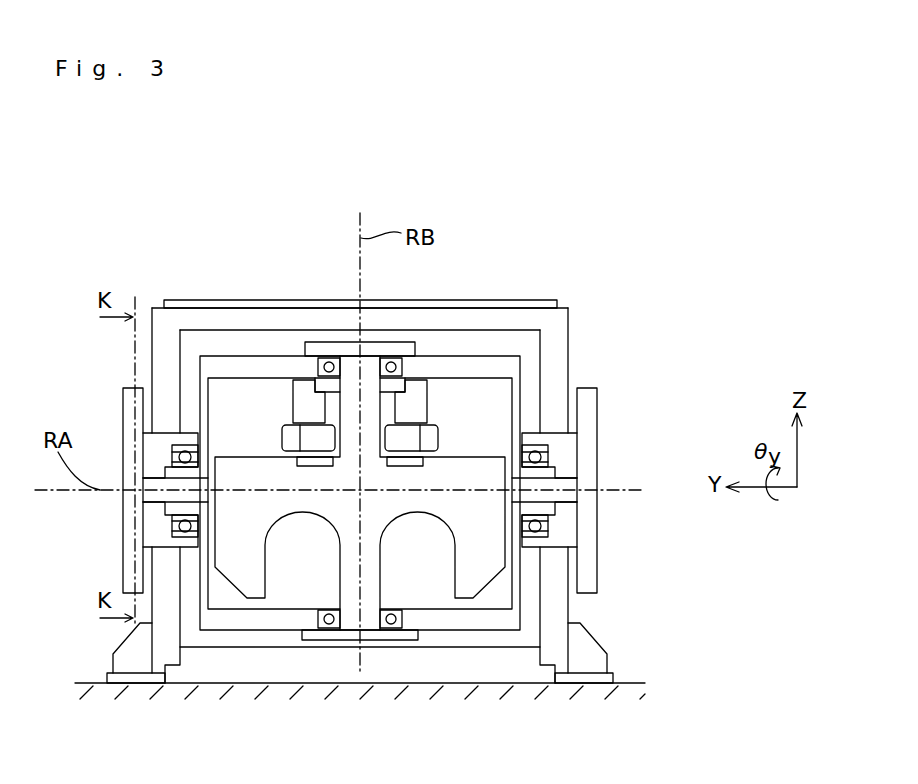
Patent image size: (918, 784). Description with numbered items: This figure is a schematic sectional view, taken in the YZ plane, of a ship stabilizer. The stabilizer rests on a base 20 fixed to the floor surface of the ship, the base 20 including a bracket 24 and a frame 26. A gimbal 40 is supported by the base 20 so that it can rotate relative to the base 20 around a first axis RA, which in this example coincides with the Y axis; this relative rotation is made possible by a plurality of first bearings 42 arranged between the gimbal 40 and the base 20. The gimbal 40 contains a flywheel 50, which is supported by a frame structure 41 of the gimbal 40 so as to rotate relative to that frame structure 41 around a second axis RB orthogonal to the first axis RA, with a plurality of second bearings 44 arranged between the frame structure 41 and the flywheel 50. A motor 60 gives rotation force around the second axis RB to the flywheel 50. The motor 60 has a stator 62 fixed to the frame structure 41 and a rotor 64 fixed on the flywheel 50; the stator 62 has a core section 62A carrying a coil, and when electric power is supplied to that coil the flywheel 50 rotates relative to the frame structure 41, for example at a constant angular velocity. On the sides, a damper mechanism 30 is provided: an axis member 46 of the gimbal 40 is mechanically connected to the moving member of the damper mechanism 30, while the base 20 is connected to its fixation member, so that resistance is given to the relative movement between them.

The base 20 is at (420, 495).
The bracket 24 is at (607, 677).
The frame 26 is at (565, 634).
The damper mechanism 30 is at (125, 400).
The gimbal 40 is at (503, 363).
The frame structure 41 is at (452, 363).
The first bearings 42 is at (545, 448).
The second bearings 44 is at (392, 362).
The axis member 46 is at (152, 482).
The flywheel 50 is at (333, 511).
The motor 60 is at (333, 326).
The stator 62 is at (292, 433).
The core section 62A is at (315, 432).
The rotor 64 is at (297, 463).